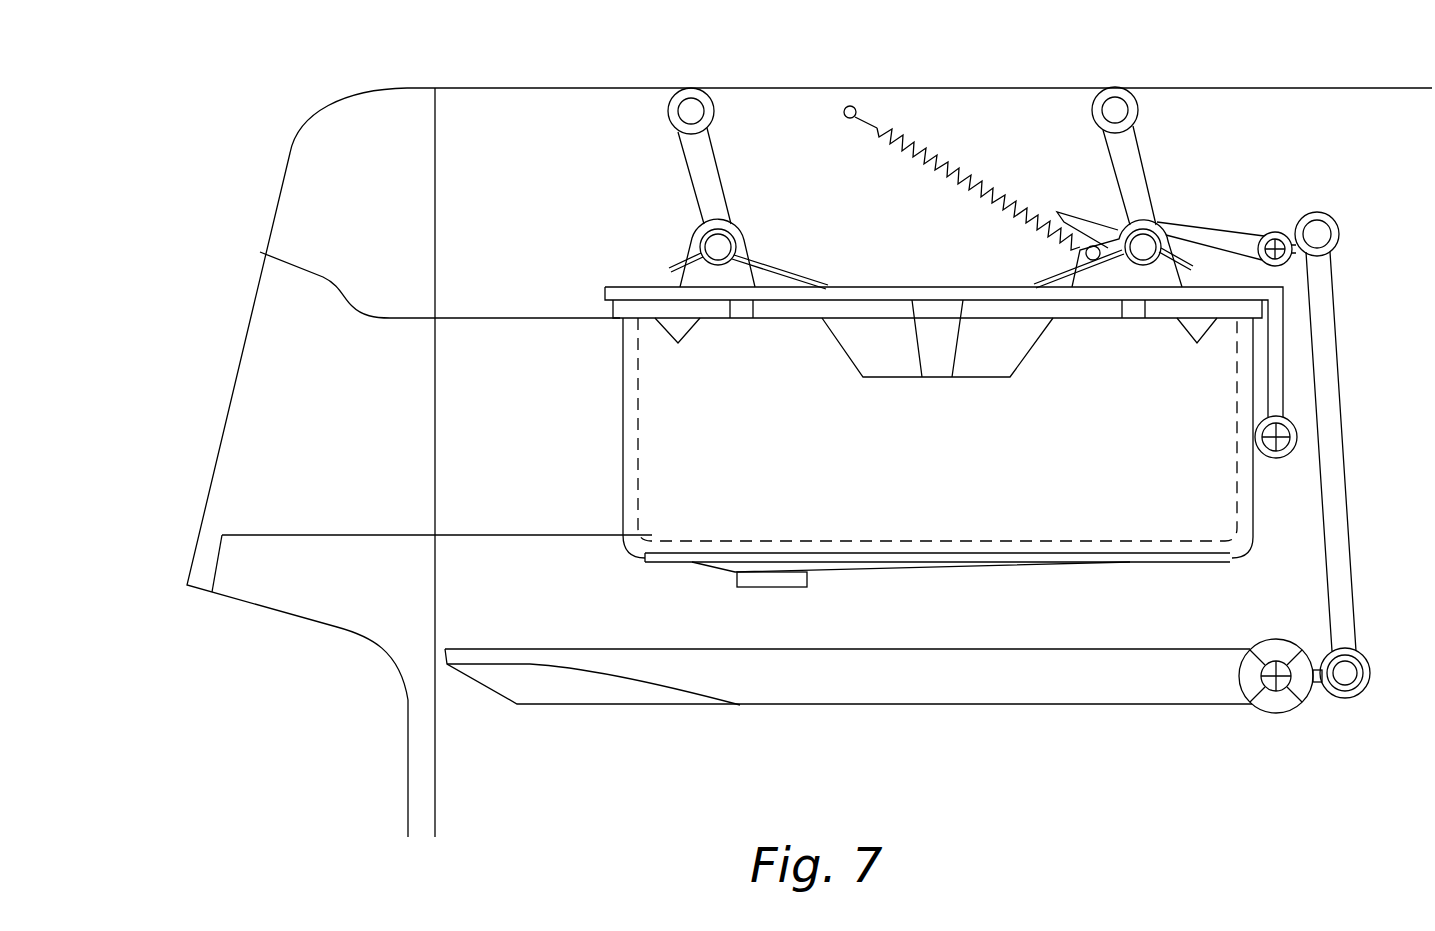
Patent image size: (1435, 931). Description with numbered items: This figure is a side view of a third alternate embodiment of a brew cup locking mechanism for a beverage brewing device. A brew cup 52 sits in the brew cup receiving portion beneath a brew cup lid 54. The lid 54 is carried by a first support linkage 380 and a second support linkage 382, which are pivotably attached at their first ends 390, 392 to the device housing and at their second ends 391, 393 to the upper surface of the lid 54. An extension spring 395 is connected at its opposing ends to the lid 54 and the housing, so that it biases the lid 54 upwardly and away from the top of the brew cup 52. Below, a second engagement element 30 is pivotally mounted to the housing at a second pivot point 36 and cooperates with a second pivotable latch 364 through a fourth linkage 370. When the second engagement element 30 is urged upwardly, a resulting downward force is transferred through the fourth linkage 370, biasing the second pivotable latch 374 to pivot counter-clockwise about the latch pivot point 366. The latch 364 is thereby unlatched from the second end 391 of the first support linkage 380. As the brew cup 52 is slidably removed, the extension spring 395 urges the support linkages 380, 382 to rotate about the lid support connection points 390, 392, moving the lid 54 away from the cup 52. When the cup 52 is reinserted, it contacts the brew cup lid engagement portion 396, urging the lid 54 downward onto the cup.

The second engagement element 30 is at (975, 689).
The second pivot point 36 is at (1270, 687).
The brew cup 52 is at (618, 365).
The brew cup lid 54 is at (610, 310).
The second pivotable latch 364 is at (1228, 217).
The latch pivot point 366 is at (1290, 233).
The fourth linkage 370 is at (1333, 437).
The second pivotable latch 374 is at (1337, 255).
The first support linkage 380 is at (1117, 148).
The second support linkage 382 is at (700, 157).
The first end of first support linkage 390 is at (1116, 110).
The second end of first support linkage 391 is at (1113, 282).
The first end of second support linkage 392 is at (690, 108).
The second end of second support linkage 393 is at (748, 250).
The extension spring 395 is at (945, 172).
The brew cup lid engagement portion 396 is at (1285, 458).